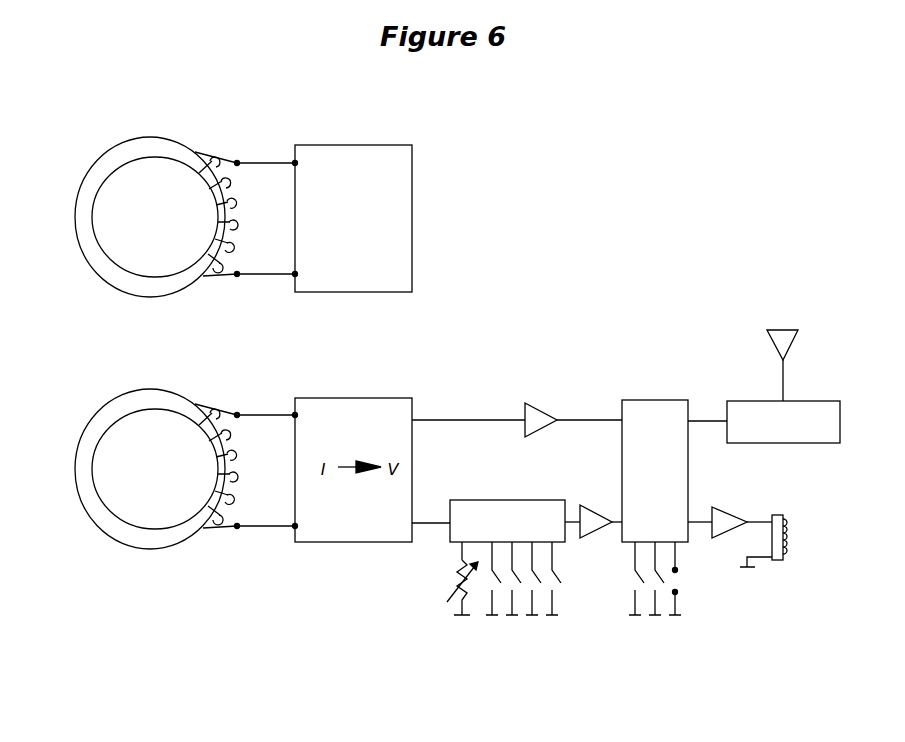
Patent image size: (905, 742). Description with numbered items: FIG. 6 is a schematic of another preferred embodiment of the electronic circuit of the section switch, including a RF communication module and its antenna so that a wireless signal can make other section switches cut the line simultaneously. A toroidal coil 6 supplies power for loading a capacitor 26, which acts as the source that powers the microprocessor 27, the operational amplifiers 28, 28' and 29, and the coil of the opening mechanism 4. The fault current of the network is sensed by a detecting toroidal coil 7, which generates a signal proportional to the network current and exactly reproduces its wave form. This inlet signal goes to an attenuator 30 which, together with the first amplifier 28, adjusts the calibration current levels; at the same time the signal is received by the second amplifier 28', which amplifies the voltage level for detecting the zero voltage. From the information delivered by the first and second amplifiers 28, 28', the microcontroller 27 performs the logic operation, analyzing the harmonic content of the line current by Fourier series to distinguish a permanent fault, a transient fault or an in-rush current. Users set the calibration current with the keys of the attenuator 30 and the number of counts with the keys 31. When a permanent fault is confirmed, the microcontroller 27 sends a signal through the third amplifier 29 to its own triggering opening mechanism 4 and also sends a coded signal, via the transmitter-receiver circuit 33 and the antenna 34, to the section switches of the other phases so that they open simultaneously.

The toroidal coil 6 is at (166, 217).
The capacitor 26 is at (353, 218).
The detecting toroidal coil 7 is at (166, 462).
The amplifier A1 28 is at (517, 401).
The amplifier A2 28' is at (581, 497).
The attenuator 30 is at (488, 557).
The microprocessor 27 is at (674, 471).
The keys 31 is at (655, 604).
The transmitter-receiver circuit 33 is at (783, 422).
The antenna 34 is at (761, 347).
The amplifier A3 29 is at (730, 503).
The opening mechanism 4 is at (772, 563).